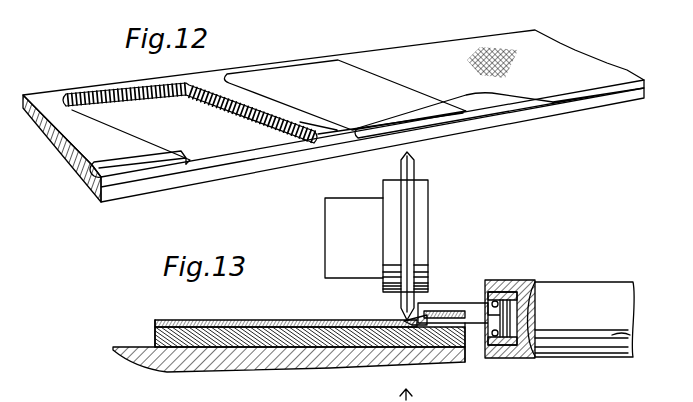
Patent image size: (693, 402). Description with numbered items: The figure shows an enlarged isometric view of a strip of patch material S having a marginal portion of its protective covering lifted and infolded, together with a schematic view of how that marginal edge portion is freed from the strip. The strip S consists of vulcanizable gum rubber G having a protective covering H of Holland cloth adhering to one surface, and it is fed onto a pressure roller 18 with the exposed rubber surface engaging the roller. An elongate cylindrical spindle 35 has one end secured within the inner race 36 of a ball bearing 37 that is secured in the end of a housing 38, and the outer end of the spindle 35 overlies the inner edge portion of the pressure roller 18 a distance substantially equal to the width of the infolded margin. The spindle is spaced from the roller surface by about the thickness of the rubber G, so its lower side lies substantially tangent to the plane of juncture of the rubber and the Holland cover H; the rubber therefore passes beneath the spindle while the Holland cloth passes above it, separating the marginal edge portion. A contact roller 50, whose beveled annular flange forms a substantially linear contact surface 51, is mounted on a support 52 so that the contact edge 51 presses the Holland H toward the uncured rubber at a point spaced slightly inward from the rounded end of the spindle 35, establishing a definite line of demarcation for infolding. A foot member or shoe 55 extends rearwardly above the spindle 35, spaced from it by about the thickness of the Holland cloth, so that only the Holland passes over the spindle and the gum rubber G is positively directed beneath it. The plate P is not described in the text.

In FIG. 12, the pressure plate P is at (258, 77).
In FIG. 12, the protective covering H is at (592, 75).
In FIG. 13, the protective covering H is at (270, 320).
In FIG. 12, the strip of patch material S is at (593, 104).
In FIG. 13, the strip of patch material S is at (175, 320).
In FIG. 12, the gum rubber G is at (84, 183).
In FIG. 13, the gum rubber G is at (155, 336).
In FIG. 13, the contact surface 51 is at (403, 155).
In FIG. 13, the contact roller 50 is at (395, 208).
In FIG. 13, the support 52 is at (335, 219).
In FIG. 13, the foot member or shoe 55 is at (447, 303).
In FIG. 13, the ball bearing 37 is at (516, 284).
In FIG. 13, the inner race 36 is at (502, 316).
In FIG. 13, the housing 38 is at (626, 335).
In FIG. 13, the spindle 35 is at (474, 328).
In FIG. 13, the pressure roller 18 is at (252, 362).